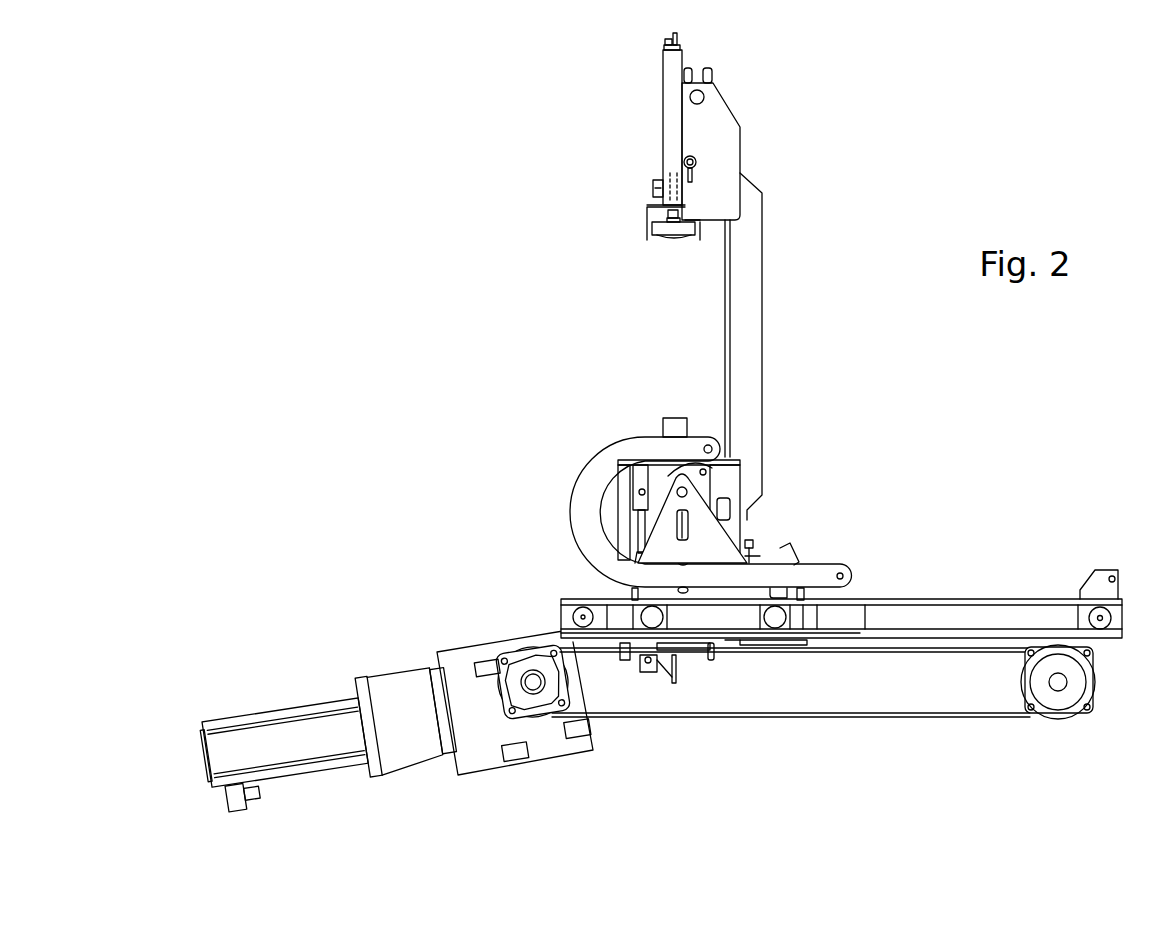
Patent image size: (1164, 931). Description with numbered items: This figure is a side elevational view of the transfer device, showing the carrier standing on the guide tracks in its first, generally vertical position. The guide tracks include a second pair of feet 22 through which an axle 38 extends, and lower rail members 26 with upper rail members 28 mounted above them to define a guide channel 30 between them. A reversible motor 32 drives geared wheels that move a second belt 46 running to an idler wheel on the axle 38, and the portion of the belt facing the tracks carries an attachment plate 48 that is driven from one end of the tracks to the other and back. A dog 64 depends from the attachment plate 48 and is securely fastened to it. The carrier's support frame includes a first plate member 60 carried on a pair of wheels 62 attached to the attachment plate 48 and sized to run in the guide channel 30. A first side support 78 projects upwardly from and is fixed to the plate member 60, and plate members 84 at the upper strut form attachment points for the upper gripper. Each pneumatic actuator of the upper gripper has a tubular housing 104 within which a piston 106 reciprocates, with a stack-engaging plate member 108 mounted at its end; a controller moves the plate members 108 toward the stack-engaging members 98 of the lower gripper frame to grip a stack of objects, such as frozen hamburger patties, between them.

The second pair of feet 22 is at (1094, 704).
The lower rail members 26 is at (1102, 638).
The upper rail members 28 is at (975, 600).
The guide channel 30 is at (1037, 620).
The motor 32 is at (278, 707).
The axle 38 is at (1058, 691).
The second belt 46 is at (885, 717).
The attachment plate 48 is at (752, 652).
The first plate member 60 is at (720, 540).
The wheels 62 is at (777, 624).
The dog 64 is at (717, 650).
The first side support 78 is at (764, 336).
The plate members 84 is at (728, 131).
The stack-engaging members 98 is at (675, 418).
The tubular housing 104 is at (663, 113).
The piston 106 is at (668, 180).
The stack-engaging plate member 108 is at (674, 237).